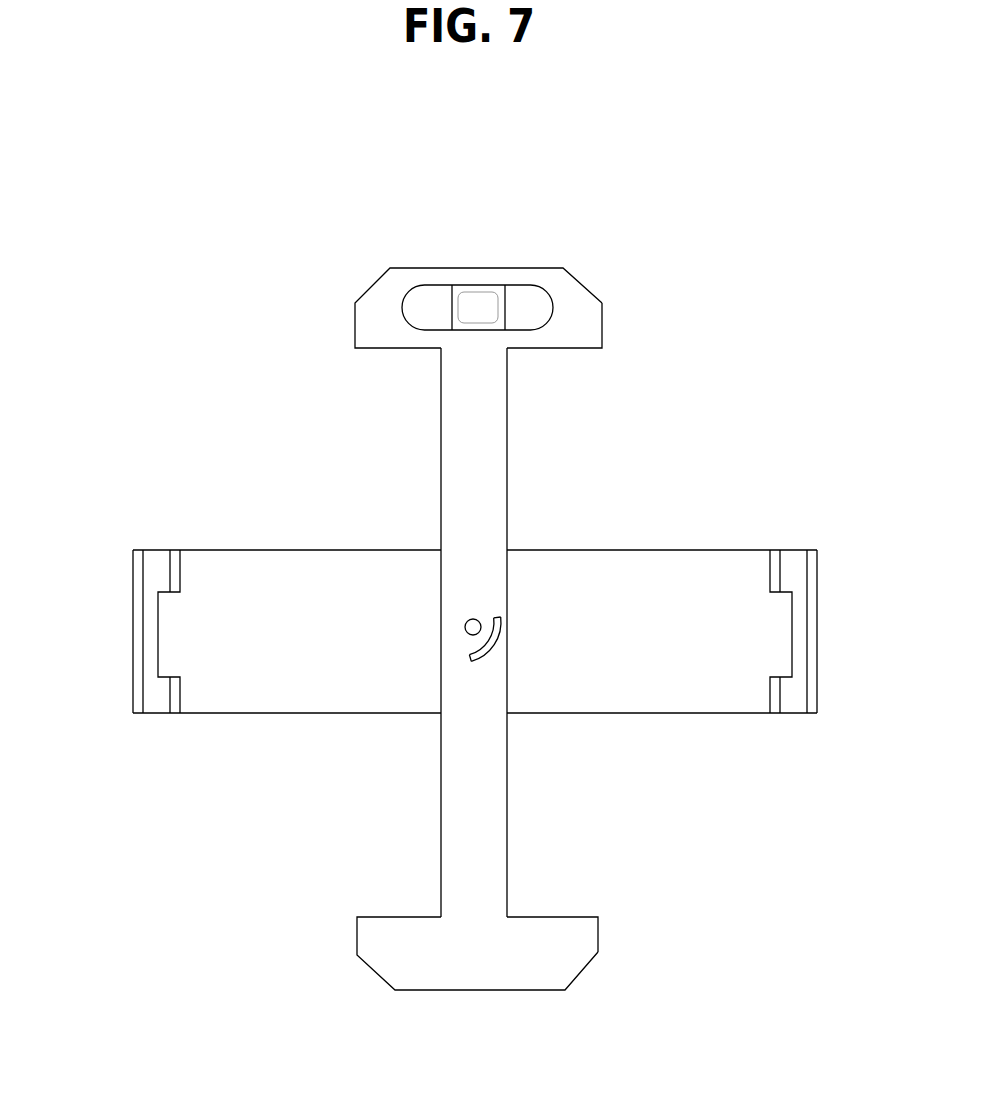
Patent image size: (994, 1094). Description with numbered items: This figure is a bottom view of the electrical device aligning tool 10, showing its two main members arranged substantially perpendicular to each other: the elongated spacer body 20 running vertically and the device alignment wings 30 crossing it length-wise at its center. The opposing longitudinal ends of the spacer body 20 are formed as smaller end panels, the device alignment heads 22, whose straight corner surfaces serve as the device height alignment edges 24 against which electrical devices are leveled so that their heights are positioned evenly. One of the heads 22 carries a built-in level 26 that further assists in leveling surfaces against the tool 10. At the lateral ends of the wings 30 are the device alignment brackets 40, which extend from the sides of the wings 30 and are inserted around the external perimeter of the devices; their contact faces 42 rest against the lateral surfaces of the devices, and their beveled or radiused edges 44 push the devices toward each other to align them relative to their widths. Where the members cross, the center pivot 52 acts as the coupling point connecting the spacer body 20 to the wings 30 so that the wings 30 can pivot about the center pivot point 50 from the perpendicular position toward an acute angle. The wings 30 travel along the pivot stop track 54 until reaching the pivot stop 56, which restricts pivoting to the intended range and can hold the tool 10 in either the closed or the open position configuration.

The electrical device aligning tool 10 is at (466, 182).
The spacer body 20 is at (424, 470).
The device alignment heads 22 is at (352, 330).
The device height alignment edges 24 is at (557, 349).
The built-in levels 26 is at (510, 287).
The device alignment wings 30 is at (283, 535).
The device alignment brackets 40 is at (118, 618).
The contact faces 42 is at (180, 695).
The beveled or radiused edges 44 is at (172, 698).
The center pivot point 50 is at (498, 602).
The center pivot 52 is at (465, 627).
The pivot stop track 54 is at (505, 654).
The pivot stop 56 is at (466, 661).